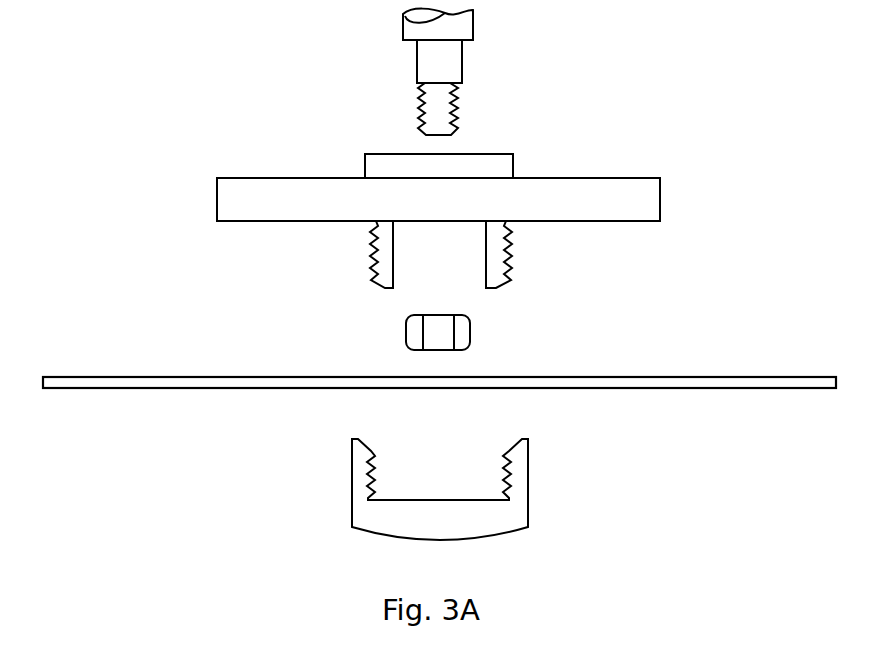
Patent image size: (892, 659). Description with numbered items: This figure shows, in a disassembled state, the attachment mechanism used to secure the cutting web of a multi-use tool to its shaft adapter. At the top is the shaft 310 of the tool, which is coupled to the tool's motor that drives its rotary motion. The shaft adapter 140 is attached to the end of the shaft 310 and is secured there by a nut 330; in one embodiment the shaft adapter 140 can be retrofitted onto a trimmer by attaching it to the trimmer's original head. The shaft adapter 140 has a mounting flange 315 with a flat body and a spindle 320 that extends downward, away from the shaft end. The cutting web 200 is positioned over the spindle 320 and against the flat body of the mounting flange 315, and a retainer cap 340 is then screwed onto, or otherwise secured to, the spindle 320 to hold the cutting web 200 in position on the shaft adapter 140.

The shaft adapter 140 is at (693, 181).
The cutting web 200 is at (653, 377).
The shaft 310 is at (462, 63).
The mounting flange 315 is at (593, 221).
The spindle 320 is at (370, 255).
The nut 330 is at (470, 332).
The retainer cap 340 is at (528, 487).